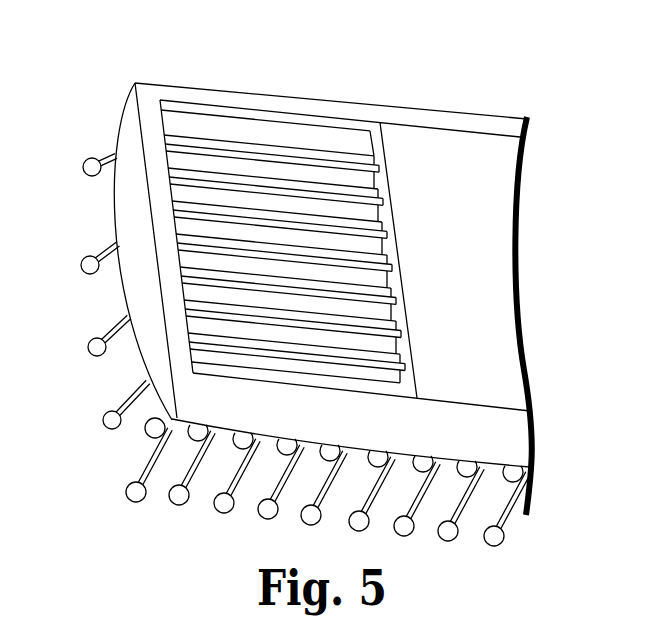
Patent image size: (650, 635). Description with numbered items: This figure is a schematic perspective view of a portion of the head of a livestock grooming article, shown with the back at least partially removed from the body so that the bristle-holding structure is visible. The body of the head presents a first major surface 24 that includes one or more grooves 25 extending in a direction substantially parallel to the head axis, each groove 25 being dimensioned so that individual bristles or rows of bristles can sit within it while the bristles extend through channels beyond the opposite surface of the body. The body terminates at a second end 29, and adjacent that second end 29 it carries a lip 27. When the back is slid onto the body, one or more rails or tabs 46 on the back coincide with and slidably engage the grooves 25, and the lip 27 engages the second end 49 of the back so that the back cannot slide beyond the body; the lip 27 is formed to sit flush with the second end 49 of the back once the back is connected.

The first major surface 24 is at (225, 64).
The groove 25 is at (267, 136).
The lip 27 is at (163, 228).
The second end 29 is at (128, 203).
The rail 46 is at (400, 347).
The second end 49 is at (381, 181).